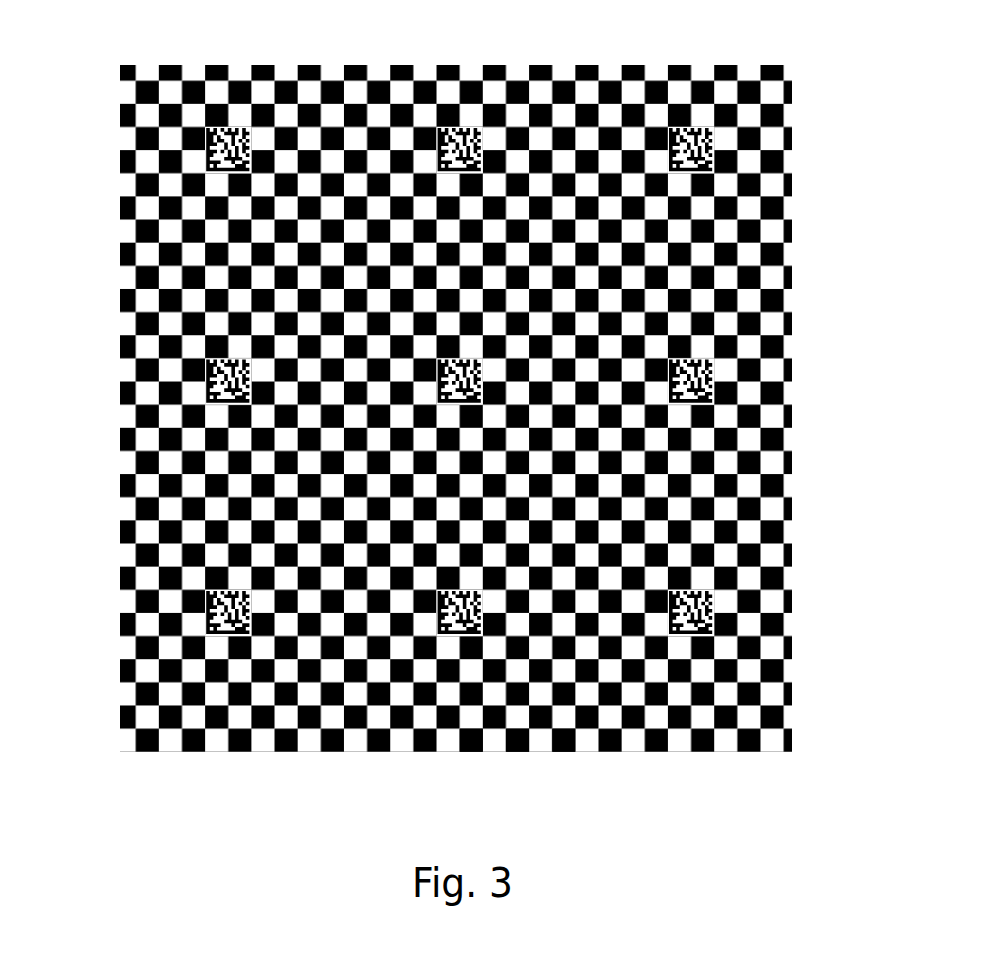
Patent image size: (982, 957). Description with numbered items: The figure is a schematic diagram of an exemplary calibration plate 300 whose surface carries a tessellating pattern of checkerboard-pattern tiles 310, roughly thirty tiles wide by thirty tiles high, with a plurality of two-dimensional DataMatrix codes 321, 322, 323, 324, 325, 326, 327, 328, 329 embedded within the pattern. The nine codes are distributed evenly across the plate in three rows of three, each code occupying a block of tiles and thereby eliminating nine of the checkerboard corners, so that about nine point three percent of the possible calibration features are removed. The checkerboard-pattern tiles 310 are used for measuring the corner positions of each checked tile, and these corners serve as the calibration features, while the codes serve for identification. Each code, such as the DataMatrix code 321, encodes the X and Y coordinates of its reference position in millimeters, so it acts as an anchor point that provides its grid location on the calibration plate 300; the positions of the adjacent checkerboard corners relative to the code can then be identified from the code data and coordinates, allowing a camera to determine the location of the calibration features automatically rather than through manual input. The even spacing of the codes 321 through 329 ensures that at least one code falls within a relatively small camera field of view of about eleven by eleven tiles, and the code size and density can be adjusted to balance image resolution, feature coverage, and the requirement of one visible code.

The calibration plate 300 is at (634, 38).
The checkerboard-pattern tiles 310 is at (560, 753).
The 2D DataMatrix code 321 is at (200, 155).
The 2D DataMatrix code 322 is at (434, 158).
The 2D DataMatrix code 323 is at (715, 143).
The 2D DataMatrix code 324 is at (202, 387).
The 2D DataMatrix code 325 is at (434, 392).
The 2D DataMatrix code 326 is at (715, 375).
The 2D DataMatrix code 327 is at (202, 618).
The 2D DataMatrix code 328 is at (433, 623).
The 2D DataMatrix code 329 is at (713, 603).